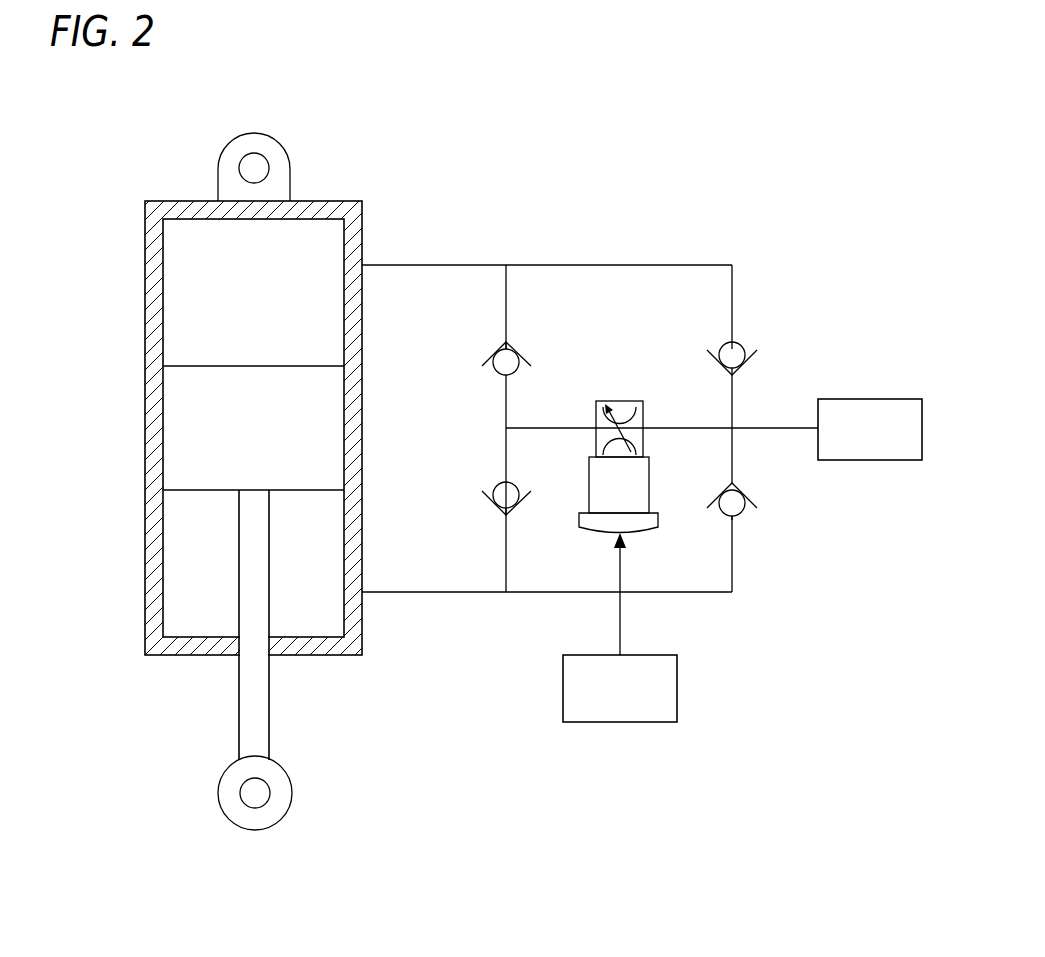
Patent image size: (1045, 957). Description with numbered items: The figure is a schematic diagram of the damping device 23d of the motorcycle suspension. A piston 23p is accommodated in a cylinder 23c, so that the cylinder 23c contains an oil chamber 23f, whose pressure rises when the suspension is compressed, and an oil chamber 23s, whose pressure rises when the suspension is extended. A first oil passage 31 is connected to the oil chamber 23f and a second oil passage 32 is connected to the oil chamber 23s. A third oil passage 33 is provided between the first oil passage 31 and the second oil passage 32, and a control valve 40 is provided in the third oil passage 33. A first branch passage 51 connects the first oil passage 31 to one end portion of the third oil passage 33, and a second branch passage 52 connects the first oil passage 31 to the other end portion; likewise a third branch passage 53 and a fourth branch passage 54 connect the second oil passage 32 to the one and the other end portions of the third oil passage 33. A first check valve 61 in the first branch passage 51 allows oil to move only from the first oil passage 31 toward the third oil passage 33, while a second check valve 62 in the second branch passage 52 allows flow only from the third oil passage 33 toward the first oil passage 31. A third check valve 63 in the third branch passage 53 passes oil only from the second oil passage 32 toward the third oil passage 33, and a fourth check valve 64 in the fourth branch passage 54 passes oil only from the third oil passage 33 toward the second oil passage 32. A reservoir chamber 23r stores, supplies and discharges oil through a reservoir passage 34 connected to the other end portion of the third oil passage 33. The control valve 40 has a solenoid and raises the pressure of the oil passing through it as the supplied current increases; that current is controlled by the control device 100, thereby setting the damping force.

The damping device 23d is at (167, 147).
The cylinder 23c is at (146, 255).
The oil chamber 23f is at (271, 304).
The piston 23p is at (162, 410).
The oil chamber 23s is at (328, 579).
The reservoir chamber 23r is at (866, 398).
The first oil passage 31 is at (417, 264).
The second oil passage 32 is at (418, 594).
The third oil passage 33 is at (668, 427).
The reservoir passage 34 is at (780, 427).
The first branch passage 51 is at (506, 300).
The second branch passage 52 is at (733, 288).
The third branch passage 53 is at (506, 552).
The fourth branch passage 54 is at (733, 563).
The first check valve 61 is at (495, 369).
The second check valve 62 is at (745, 348).
The third check valve 63 is at (497, 487).
The fourth check valve 64 is at (750, 513).
The control valve 40 is at (640, 535).
The control device 100 is at (620, 724).